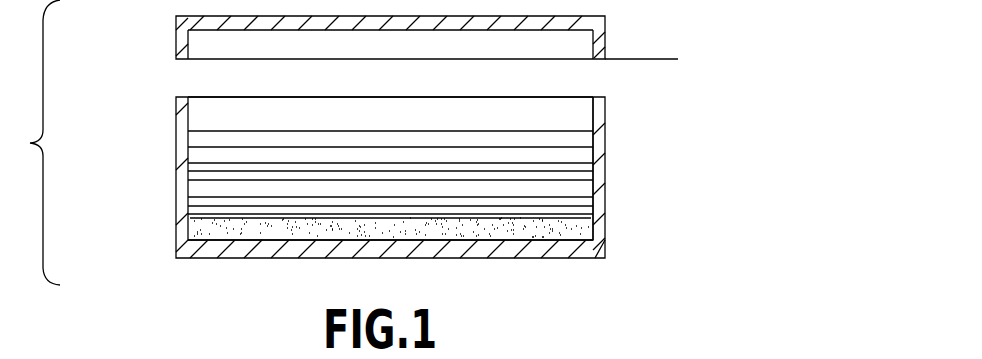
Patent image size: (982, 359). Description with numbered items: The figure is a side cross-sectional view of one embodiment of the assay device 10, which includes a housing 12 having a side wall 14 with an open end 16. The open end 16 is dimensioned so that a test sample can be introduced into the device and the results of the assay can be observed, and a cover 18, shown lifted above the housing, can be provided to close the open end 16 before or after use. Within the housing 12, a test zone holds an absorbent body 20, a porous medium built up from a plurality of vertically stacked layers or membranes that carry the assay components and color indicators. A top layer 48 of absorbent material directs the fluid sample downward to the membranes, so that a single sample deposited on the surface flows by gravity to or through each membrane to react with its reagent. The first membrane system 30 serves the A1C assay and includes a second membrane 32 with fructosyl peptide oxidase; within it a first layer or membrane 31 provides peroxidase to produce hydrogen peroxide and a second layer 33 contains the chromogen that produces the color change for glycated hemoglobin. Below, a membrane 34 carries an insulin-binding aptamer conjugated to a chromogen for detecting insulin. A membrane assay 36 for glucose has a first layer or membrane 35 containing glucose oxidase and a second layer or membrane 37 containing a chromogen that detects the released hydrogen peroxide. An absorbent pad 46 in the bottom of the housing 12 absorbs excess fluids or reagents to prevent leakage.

The assay device 10 is at (737, 146).
The housing 12 is at (606, 130).
The side wall 14 is at (598, 122).
The open end 16 is at (580, 97).
The cover 18 is at (594, 43).
The absorbent body 20 is at (242, 122).
The first membrane system 30 is at (203, 158).
The first layer or membrane 31 is at (585, 167).
The second membrane 32 is at (186, 176).
The second layer 33 is at (583, 176).
The membrane 34 is at (193, 185).
The first layer or membrane 35 is at (585, 203).
The membrane assay 36 is at (178, 215).
The second layer or membrane 37 is at (585, 222).
The absorbent pad 46 is at (562, 230).
The top layer 48 is at (203, 140).